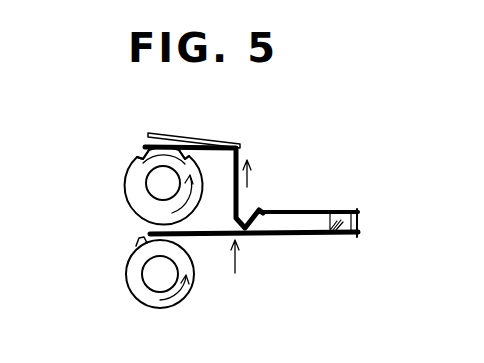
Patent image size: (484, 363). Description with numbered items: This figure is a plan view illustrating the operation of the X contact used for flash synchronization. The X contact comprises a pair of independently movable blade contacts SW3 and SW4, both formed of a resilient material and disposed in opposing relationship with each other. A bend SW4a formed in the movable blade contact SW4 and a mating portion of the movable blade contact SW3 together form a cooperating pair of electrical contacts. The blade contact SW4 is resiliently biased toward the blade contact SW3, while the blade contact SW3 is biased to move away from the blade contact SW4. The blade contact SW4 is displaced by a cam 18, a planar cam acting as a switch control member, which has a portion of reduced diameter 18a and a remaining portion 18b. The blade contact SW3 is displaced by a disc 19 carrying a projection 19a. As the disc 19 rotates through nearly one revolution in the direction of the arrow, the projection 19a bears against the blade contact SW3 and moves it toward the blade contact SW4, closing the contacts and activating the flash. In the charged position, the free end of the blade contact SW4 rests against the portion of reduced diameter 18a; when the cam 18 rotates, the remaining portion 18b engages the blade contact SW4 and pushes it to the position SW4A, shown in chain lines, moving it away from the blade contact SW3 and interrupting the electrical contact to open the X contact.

The cam 18 is at (133, 202).
The portion of reduced diameter 18a is at (126, 168).
The remaining portion of the cam 18b is at (122, 180).
The disc 19 is at (135, 283).
The projection 19a is at (180, 240).
The displaced position of movable blade contact SW4 SW4A is at (240, 143).
The bend SW4a is at (273, 212).
The movable blade contact SW4 is at (323, 213).
The movable blade contact SW3 is at (330, 237).